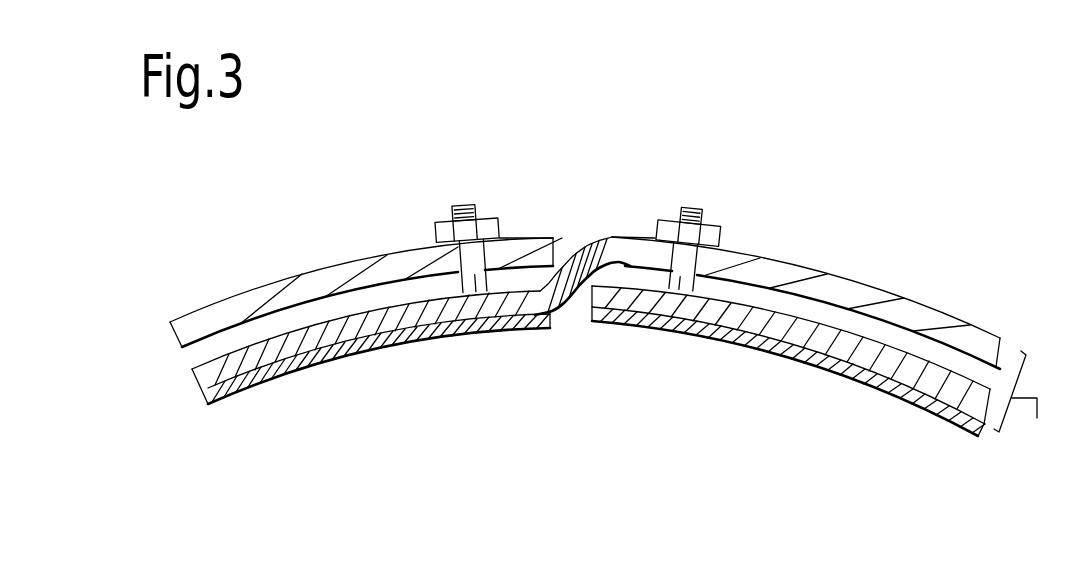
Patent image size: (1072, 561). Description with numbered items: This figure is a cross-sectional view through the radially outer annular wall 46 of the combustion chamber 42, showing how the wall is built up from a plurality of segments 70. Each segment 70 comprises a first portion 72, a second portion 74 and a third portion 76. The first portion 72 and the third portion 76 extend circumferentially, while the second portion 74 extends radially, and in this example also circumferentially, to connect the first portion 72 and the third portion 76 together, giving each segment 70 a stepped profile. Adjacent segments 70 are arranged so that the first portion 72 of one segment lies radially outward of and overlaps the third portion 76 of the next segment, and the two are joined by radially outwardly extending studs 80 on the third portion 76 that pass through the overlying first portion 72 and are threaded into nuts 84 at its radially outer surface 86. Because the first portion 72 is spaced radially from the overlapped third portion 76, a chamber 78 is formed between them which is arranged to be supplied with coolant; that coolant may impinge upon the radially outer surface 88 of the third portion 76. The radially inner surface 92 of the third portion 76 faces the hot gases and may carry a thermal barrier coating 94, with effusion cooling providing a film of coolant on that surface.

The wall segment 42 is at (838, 258).
The radially outer annular wall 46 is at (1024, 407).
The segment 70 is at (390, 313).
The first portion 72 is at (411, 256).
The second portion 74 is at (573, 284).
The third portion 76 is at (342, 335).
The chamber 78 is at (305, 318).
The stud 80 is at (473, 282).
The nut 84 is at (491, 221).
The radially outer surface 86 is at (520, 238).
The radially outer surface 88 is at (252, 362).
The radially inner surface 92 is at (290, 378).
The thermal barrier coating 94 is at (428, 343).